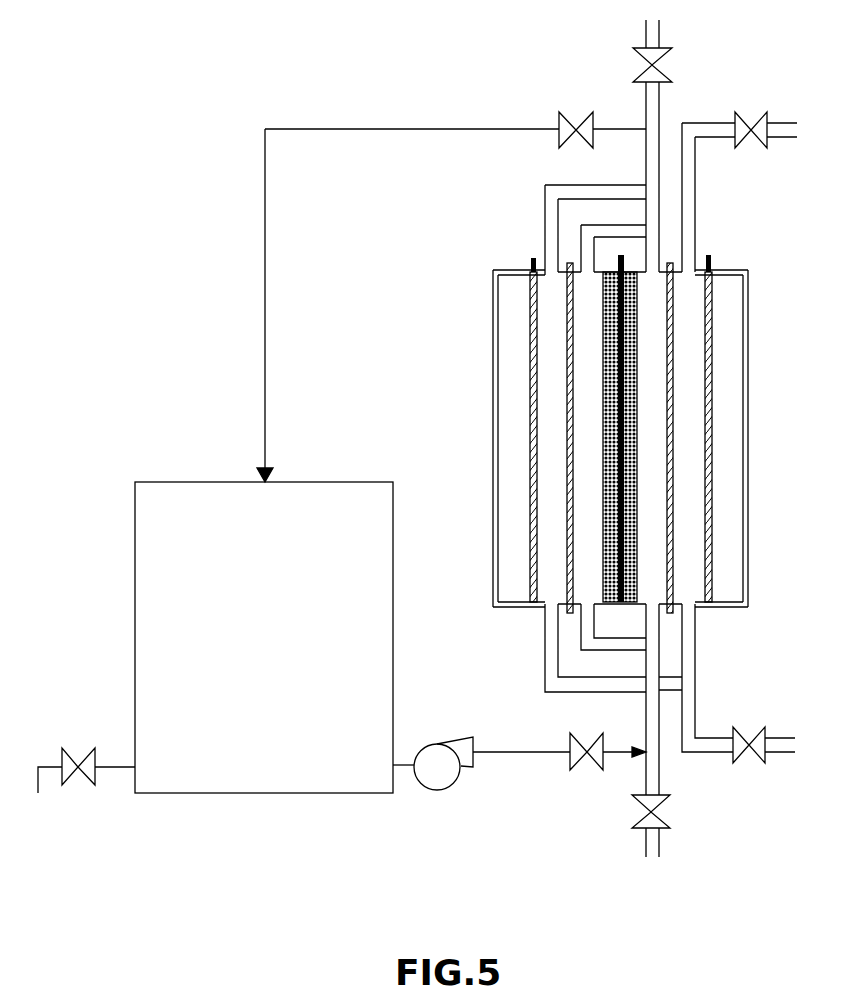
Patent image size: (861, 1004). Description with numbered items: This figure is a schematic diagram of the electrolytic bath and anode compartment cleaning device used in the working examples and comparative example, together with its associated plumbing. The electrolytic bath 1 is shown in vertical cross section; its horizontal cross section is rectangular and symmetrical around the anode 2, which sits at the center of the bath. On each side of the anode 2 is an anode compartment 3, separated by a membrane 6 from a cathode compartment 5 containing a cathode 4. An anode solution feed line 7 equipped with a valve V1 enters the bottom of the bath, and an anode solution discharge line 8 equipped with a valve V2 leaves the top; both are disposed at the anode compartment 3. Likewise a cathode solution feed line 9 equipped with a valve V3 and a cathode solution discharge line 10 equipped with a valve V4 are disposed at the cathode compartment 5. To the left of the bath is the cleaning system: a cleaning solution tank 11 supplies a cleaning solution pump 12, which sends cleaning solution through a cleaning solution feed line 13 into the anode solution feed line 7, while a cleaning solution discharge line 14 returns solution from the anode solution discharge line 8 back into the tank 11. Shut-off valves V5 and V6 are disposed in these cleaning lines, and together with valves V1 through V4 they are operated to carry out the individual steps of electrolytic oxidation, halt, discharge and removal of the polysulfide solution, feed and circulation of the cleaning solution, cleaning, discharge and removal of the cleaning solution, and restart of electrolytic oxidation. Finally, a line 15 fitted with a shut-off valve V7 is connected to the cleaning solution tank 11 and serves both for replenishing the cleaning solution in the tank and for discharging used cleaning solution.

The electrolytic bath 1 is at (773, 441).
The anode 2 is at (605, 555).
The anode compartment 3 is at (585, 517).
The cathode 4 is at (532, 385).
The cathode compartment 5 is at (553, 352).
The membrane 6 is at (568, 313).
The anode solution feed line 7 is at (659, 782).
The anode solution discharge line 8 is at (660, 103).
The cathode solution feed line 9 is at (695, 705).
The cathode solution discharge line 10 is at (697, 170).
The cleaning solution tank 11 is at (264, 637).
The cleaning solution pump 12 is at (437, 790).
The cleaning solution feed line 13 is at (522, 752).
The cleaning solution discharge line 14 is at (425, 129).
The line for replenishment and discharge of cleaning solution 15 is at (117, 767).
The valve V1 is at (667, 820).
The valve V2 is at (663, 70).
The valve V3 is at (755, 763).
The valve V4 is at (752, 123).
The shut-off valve V5 is at (573, 127).
The shut-off valve V6 is at (582, 768).
The shut-off valve V7 is at (73, 750).